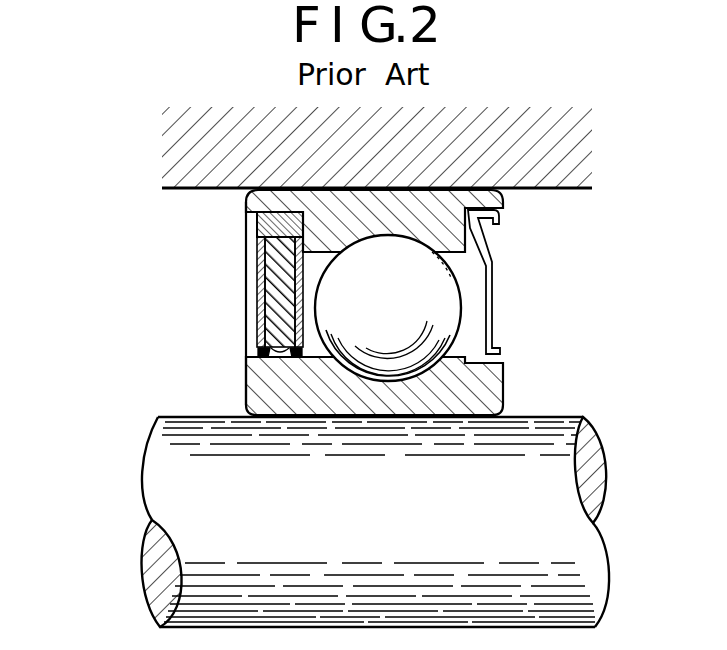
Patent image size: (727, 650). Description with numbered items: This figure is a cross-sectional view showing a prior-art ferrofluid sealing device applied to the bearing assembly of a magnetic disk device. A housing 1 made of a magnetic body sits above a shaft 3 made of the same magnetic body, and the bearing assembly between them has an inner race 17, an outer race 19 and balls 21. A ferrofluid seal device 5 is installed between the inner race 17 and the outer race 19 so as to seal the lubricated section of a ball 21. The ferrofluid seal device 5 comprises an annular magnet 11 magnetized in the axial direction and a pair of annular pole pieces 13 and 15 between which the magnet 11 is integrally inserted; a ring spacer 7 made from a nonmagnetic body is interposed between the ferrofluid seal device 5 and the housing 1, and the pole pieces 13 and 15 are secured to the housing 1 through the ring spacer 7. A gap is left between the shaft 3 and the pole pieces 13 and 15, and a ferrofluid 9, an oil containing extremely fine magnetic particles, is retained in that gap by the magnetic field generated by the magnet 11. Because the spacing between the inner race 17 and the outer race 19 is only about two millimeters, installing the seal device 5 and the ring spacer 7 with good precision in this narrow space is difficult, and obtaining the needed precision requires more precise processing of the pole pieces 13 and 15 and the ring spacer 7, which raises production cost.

The housing 1 is at (586, 130).
The shaft 3 is at (565, 415).
The ferrofluid seal device 5 is at (238, 299).
The ring spacer 7 is at (260, 230).
The ferrofluid 9 is at (255, 352).
The annular magnet 11 is at (265, 283).
The annular pole piece 13 is at (258, 262).
The annular pole piece 15 is at (260, 343).
The inner race 17 is at (493, 380).
The outer race 19 is at (498, 202).
The ball 21 is at (438, 323).